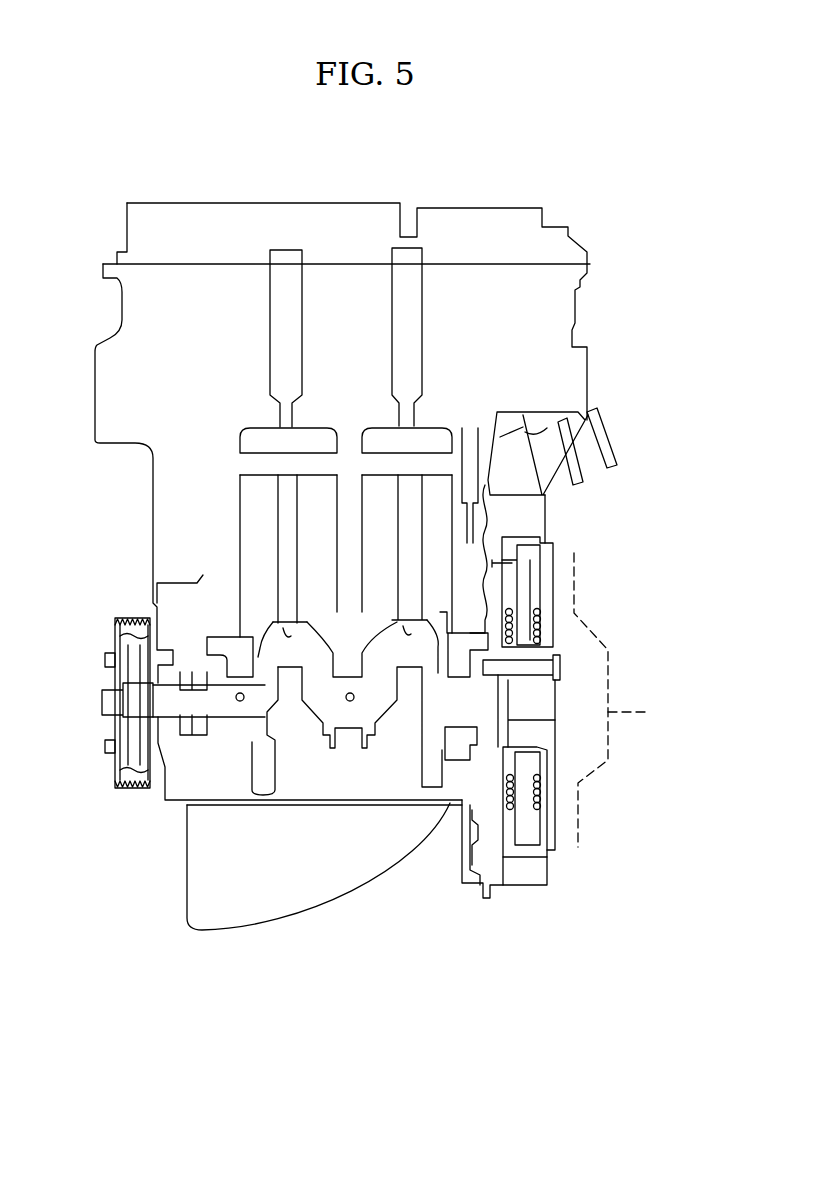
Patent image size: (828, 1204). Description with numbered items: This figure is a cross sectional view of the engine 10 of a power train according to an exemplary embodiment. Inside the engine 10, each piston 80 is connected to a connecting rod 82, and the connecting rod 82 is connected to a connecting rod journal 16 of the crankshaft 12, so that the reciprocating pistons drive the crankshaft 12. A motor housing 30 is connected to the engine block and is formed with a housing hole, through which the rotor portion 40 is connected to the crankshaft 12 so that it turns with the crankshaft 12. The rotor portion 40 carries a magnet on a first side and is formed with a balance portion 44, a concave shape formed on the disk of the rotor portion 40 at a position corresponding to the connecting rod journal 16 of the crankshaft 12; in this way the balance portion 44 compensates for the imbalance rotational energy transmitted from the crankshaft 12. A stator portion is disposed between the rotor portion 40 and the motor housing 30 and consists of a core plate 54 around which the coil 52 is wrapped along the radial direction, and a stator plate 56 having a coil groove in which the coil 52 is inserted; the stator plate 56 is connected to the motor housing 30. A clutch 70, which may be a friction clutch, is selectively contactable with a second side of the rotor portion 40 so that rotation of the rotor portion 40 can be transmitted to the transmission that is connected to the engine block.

The engine 10 is at (353, 930).
The crankshaft 12 is at (460, 707).
The connecting rod journal 16 is at (287, 657).
The motor housing 30 is at (517, 887).
The rotor portion 40 is at (595, 690).
The balance portion 44 is at (520, 612).
The coil 52 is at (540, 637).
The core plate 54 is at (525, 793).
The stator plate 56 is at (457, 757).
The clutch 70 is at (610, 712).
The piston 80 is at (252, 465).
The connecting rod 82 is at (288, 545).